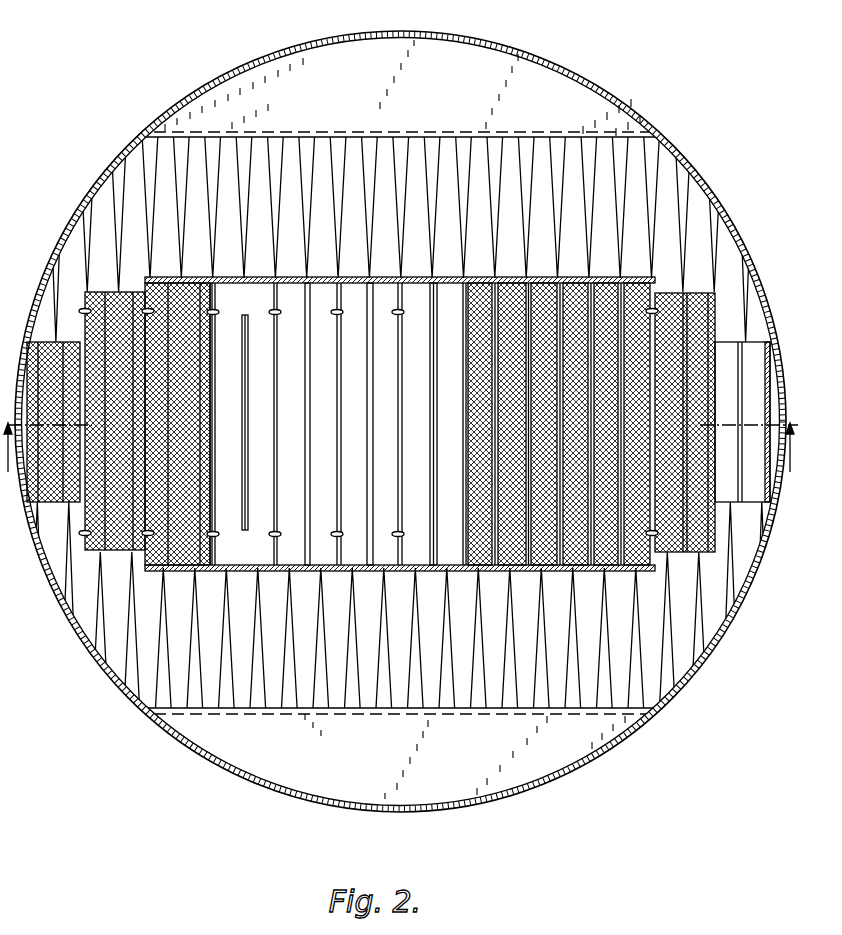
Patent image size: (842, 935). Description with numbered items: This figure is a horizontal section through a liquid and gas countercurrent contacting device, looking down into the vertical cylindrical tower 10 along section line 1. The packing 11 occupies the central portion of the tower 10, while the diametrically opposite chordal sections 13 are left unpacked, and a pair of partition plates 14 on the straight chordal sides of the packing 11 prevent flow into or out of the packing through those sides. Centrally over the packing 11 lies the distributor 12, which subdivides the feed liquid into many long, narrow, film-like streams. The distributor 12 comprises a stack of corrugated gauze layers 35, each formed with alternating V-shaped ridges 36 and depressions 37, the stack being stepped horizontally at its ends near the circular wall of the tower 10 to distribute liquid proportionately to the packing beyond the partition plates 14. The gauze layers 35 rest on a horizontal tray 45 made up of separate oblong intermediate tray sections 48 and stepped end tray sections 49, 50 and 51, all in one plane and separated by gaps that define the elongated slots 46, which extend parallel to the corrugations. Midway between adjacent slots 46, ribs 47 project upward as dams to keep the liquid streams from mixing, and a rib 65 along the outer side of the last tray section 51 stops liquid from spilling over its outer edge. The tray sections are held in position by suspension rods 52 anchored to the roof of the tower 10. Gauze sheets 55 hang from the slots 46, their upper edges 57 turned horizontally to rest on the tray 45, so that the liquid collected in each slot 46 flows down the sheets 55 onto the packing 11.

The section line 1- 1 is at (401, 463).
The tower 10 is at (222, 76).
The packing 11 is at (513, 153).
The distributor 12 is at (148, 520).
The chordal sections 13 is at (528, 52).
The partition plates 14 is at (347, 130).
The gauze layers 35 is at (200, 366).
The ridges 36 is at (182, 500).
The depressions 37 is at (200, 418).
The tray 45 is at (290, 571).
The slots 46 is at (305, 414).
The ribs 47 is at (275, 441).
The intermediate tray sections 48 is at (326, 572).
The end tray section 49 is at (176, 284).
The end tray section 50 is at (112, 288).
The end tray section 51 is at (72, 340).
The suspension rods 52 is at (272, 314).
The gauze sheets 55 is at (442, 152).
The upper edges 57 is at (468, 350).
The rib 65 is at (26, 364).